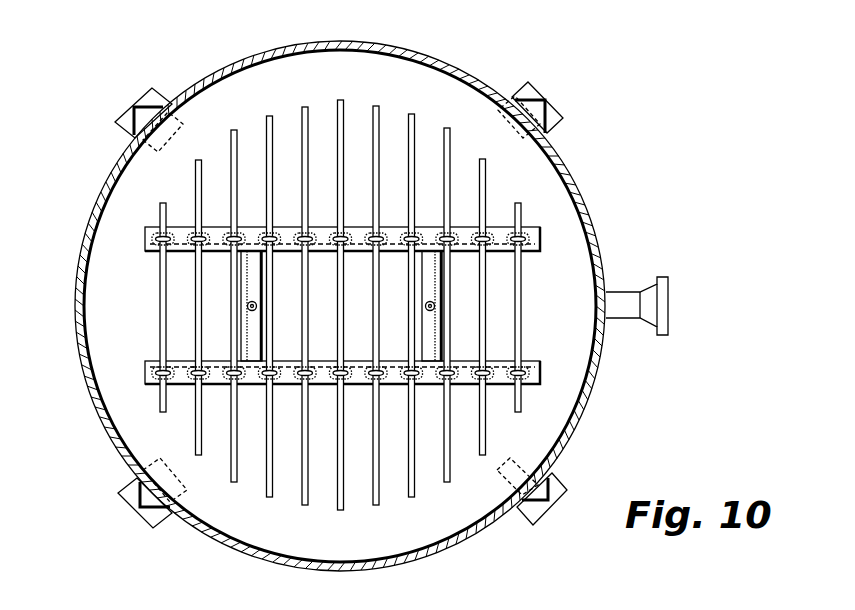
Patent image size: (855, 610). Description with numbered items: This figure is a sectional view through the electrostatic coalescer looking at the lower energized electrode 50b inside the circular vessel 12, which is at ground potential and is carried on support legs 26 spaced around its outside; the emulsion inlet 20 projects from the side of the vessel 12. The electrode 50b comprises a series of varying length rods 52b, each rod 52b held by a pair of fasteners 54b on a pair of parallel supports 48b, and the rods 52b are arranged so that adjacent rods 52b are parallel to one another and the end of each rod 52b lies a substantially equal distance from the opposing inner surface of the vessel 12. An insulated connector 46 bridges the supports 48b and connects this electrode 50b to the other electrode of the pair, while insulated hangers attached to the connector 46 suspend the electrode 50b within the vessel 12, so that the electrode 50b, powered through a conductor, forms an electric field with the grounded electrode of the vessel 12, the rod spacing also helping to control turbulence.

The vessel 12 is at (577, 176).
The emulsion inlet 20 is at (661, 276).
The support leg 26 is at (545, 96).
The insulated connector 46 is at (246, 306).
The support 48b is at (541, 231).
The electrode 50b is at (356, 258).
The rod 52b is at (308, 107).
The fastener 54b is at (296, 228).